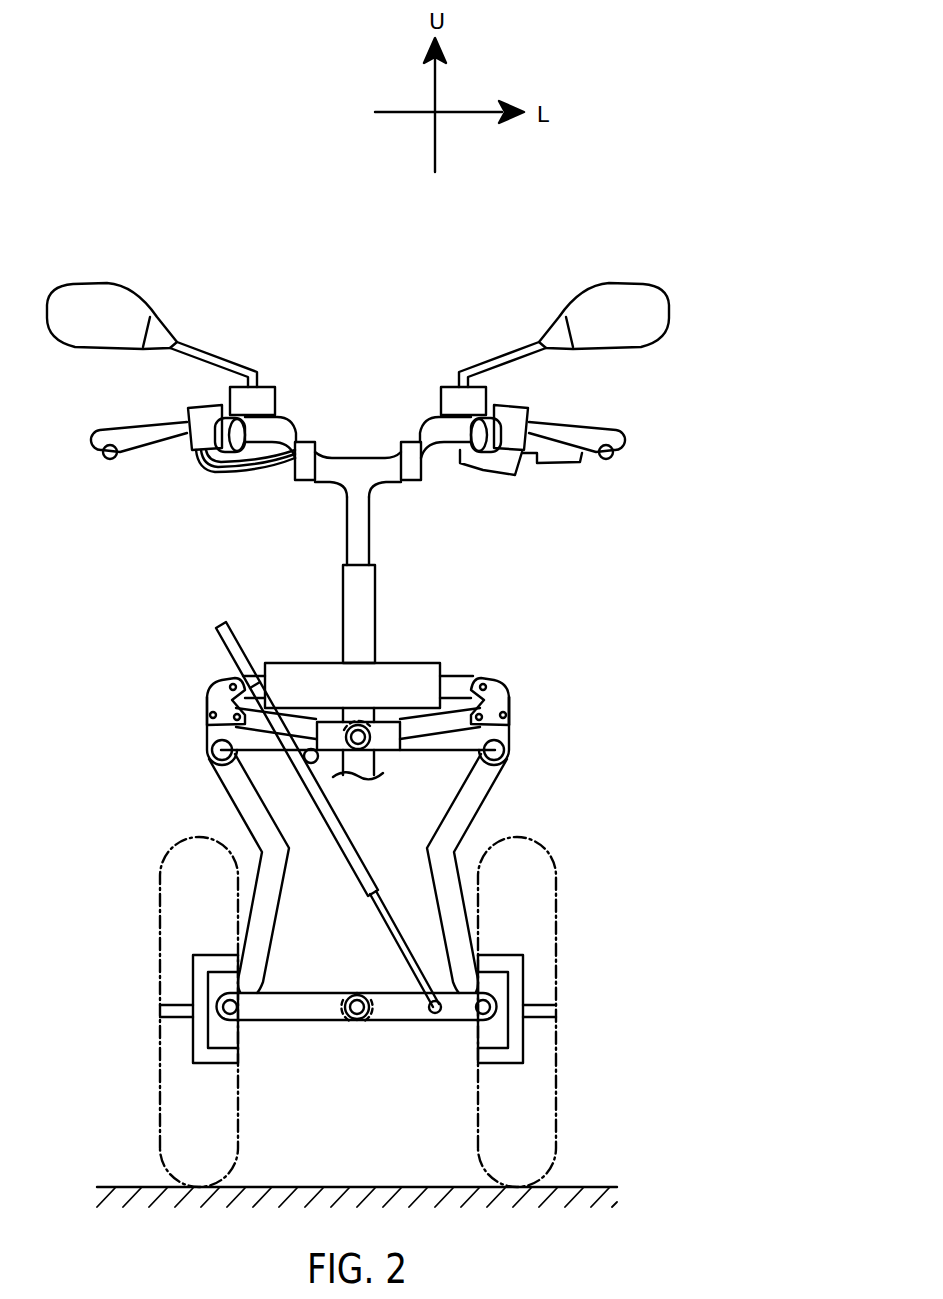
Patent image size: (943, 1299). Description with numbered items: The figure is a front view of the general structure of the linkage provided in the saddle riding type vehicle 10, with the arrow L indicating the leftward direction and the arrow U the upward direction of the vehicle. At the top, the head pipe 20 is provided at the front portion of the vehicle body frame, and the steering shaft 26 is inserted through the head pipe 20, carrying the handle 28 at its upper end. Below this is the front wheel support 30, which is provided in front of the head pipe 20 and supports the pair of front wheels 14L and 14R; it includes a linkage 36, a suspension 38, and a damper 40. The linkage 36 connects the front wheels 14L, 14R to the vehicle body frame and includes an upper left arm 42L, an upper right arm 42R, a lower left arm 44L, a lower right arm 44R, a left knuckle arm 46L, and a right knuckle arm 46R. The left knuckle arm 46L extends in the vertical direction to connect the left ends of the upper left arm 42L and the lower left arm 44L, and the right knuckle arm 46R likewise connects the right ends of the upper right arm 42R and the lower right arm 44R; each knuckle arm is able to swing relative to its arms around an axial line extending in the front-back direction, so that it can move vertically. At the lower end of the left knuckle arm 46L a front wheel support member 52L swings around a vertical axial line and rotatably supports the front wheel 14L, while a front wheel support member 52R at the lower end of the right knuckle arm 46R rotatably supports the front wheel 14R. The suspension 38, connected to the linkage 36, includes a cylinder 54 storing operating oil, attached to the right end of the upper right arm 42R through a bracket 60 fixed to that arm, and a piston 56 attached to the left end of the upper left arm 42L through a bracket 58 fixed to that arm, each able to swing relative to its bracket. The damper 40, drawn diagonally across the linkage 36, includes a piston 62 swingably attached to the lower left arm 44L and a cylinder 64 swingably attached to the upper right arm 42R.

The saddle riding type vehicle 10 is at (569, 256).
The front wheel 14R is at (162, 885).
The front wheel 14L is at (555, 885).
The head pipe 20 is at (376, 597).
The steering shaft 26 is at (371, 538).
The handle 28 is at (609, 432).
The front wheel support 30 is at (208, 758).
The linkage 36 is at (521, 758).
The suspension 38 is at (440, 660).
The damper 40 is at (355, 848).
The upper right arm 42R is at (218, 735).
The upper left arm 42L is at (511, 730).
The lower right arm 44R is at (287, 1020).
The lower left arm 44L is at (403, 1020).
The right knuckle arm 46R is at (238, 795).
The left knuckle arm 46L is at (480, 795).
The front wheel support member 52R is at (193, 985).
The front wheel support member 52L is at (522, 982).
The cylinder 54 is at (291, 660).
The piston 56 is at (478, 678).
The bracket 58 is at (510, 697).
The bracket 60 is at (210, 690).
The piston 62 is at (385, 925).
The cylinder 64 is at (352, 868).